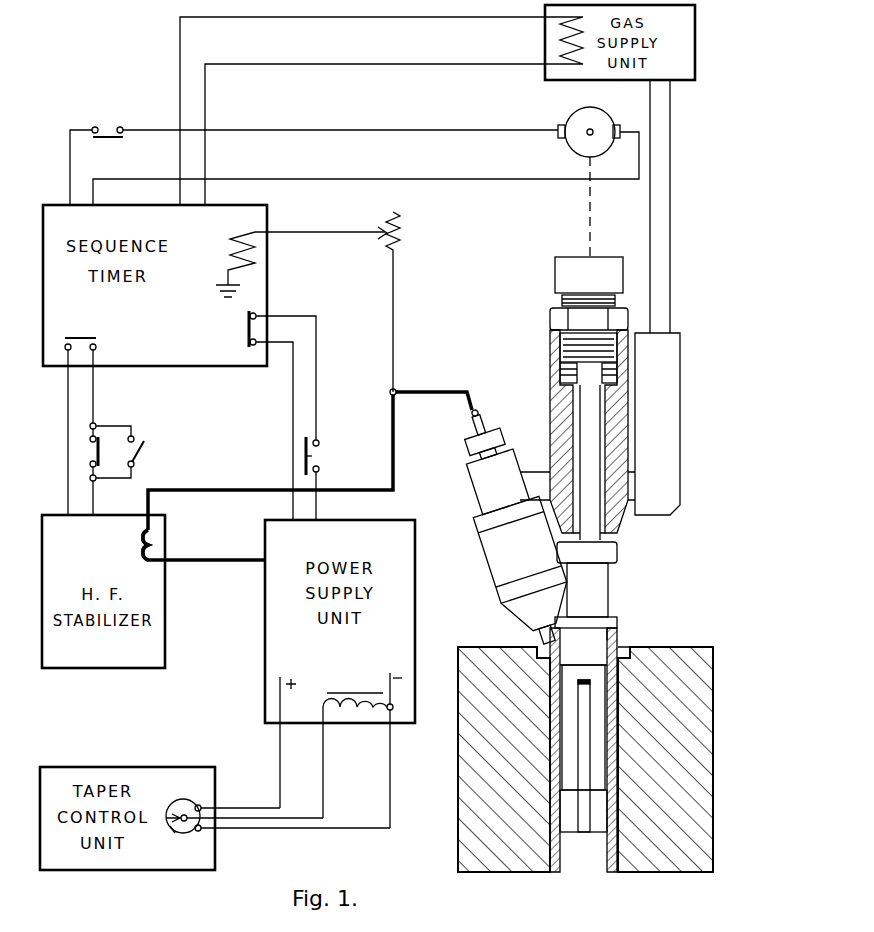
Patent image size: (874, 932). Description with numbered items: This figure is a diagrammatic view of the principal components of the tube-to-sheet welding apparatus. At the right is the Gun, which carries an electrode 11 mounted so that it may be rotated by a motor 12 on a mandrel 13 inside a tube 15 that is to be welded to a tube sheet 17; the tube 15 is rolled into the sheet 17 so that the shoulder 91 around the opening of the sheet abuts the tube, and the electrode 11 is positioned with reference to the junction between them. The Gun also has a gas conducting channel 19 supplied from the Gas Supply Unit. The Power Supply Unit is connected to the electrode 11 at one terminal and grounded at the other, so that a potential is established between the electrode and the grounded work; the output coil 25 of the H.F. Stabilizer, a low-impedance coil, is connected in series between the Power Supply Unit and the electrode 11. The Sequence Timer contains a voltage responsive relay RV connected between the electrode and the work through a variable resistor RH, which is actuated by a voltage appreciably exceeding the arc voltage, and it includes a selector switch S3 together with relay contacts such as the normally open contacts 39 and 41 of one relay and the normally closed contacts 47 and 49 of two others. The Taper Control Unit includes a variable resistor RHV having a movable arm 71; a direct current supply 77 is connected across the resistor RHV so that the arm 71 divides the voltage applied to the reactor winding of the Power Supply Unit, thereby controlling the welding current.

The electrode 11 is at (540, 634).
The motor 12 is at (583, 114).
The mandrel 13 is at (603, 583).
The tube 15 is at (612, 641).
The tube sheet 17 is at (470, 842).
The gas conducting channel 19 is at (670, 300).
The output coil 25 is at (152, 547).
The normally open contact 39 is at (321, 478).
The normally open contact 41 is at (92, 337).
The normally closed contact 47 is at (248, 326).
The normally closed contact 49 is at (95, 455).
The movable arm 71 is at (172, 832).
The direct current supply 77 is at (388, 679).
The shoulder 91 is at (623, 654).
The voltage responsive relay RV is at (241, 233).
The variable resistor RH is at (401, 220).
The selector switch S3 is at (140, 450).
The variable resistor RHV is at (173, 799).